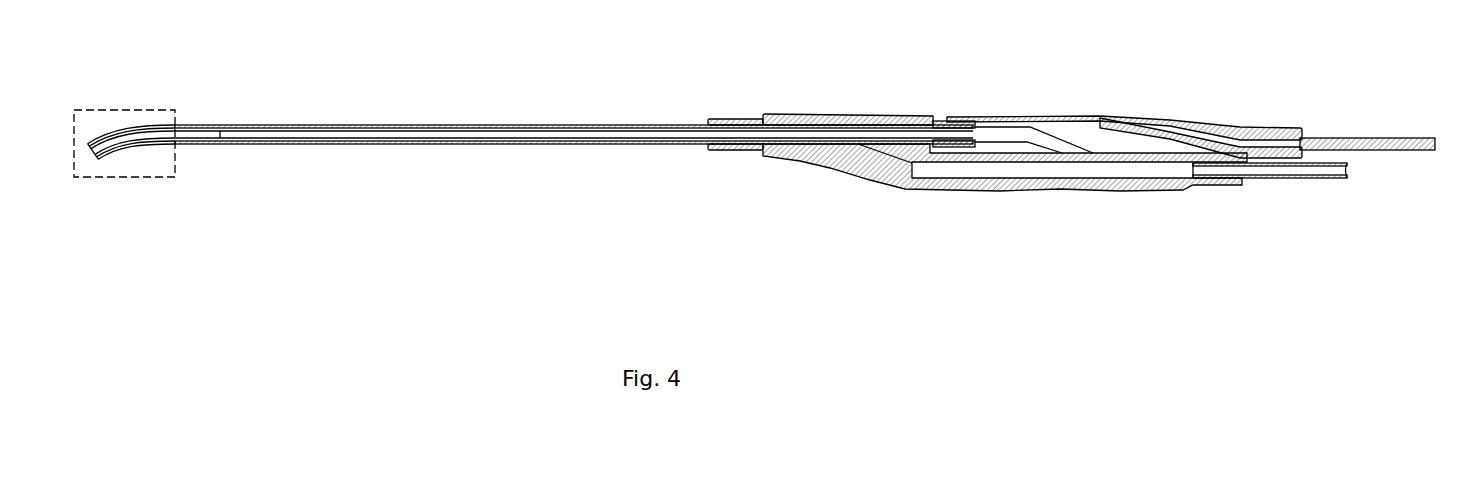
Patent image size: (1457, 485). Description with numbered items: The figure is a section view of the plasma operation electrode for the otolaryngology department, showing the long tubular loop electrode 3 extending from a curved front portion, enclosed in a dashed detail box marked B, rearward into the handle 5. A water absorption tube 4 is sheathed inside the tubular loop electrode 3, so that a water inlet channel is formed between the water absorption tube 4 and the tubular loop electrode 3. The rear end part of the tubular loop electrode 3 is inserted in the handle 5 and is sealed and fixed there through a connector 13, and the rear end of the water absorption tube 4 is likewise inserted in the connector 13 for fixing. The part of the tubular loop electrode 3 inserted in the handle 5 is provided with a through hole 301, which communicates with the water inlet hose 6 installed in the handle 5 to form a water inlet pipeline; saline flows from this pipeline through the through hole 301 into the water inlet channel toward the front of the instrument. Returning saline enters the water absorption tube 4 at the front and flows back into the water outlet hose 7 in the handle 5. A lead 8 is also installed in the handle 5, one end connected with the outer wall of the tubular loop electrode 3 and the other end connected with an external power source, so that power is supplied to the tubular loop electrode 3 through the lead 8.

The tubular loop electrode 3 is at (586, 144).
The water absorption tube 4 is at (337, 144).
The handle 5 is at (813, 168).
The water inlet hose 6 is at (1287, 182).
The water outlet hose 7 is at (1082, 145).
The lead 8 is at (1377, 132).
The connector 13 is at (955, 127).
The through hole 301 is at (863, 145).
The detail region B is at (177, 180).